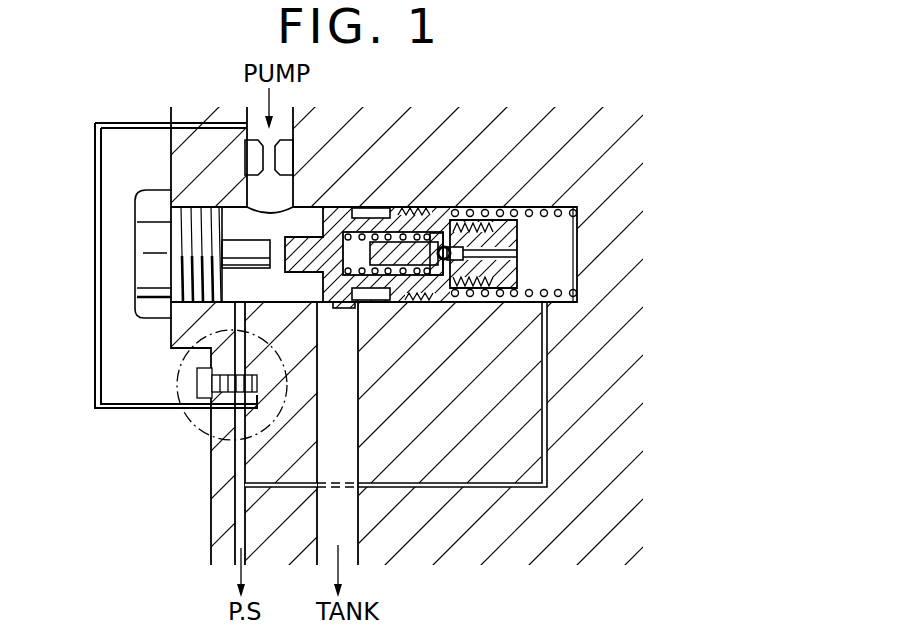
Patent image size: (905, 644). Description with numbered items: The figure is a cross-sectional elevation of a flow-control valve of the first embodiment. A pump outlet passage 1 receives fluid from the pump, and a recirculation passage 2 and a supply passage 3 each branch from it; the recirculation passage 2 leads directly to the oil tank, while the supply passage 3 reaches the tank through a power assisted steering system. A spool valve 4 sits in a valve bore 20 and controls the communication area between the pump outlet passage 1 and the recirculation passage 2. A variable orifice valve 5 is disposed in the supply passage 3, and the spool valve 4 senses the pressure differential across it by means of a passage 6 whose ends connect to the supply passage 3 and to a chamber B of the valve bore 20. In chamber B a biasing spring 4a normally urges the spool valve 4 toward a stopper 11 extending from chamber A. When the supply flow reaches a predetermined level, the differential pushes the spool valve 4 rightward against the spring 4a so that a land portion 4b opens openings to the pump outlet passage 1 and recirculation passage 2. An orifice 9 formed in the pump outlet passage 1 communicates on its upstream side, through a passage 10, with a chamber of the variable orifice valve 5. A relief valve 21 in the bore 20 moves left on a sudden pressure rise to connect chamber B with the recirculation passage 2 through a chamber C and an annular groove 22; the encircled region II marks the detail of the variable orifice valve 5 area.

The pump outlet passage 1 is at (293, 124).
The recirculation passage 2 is at (337, 408).
The supply passage 3 is at (240, 471).
The spool valve 4 is at (305, 250).
The biasing spring 4a is at (532, 211).
The land portion 4b is at (334, 306).
The variable orifice valve 5 is at (247, 375).
The passage 6 is at (473, 485).
The orifice 9 is at (281, 160).
The passage 10 is at (100, 240).
The stopper 11 is at (253, 252).
The valve bore 20 is at (492, 210).
The relief valve 21 is at (418, 250).
The annular groove 22 is at (378, 212).
The chamber A is at (243, 223).
The chamber B is at (560, 258).
The chamber C is at (360, 250).
The detail circle II is at (193, 432).